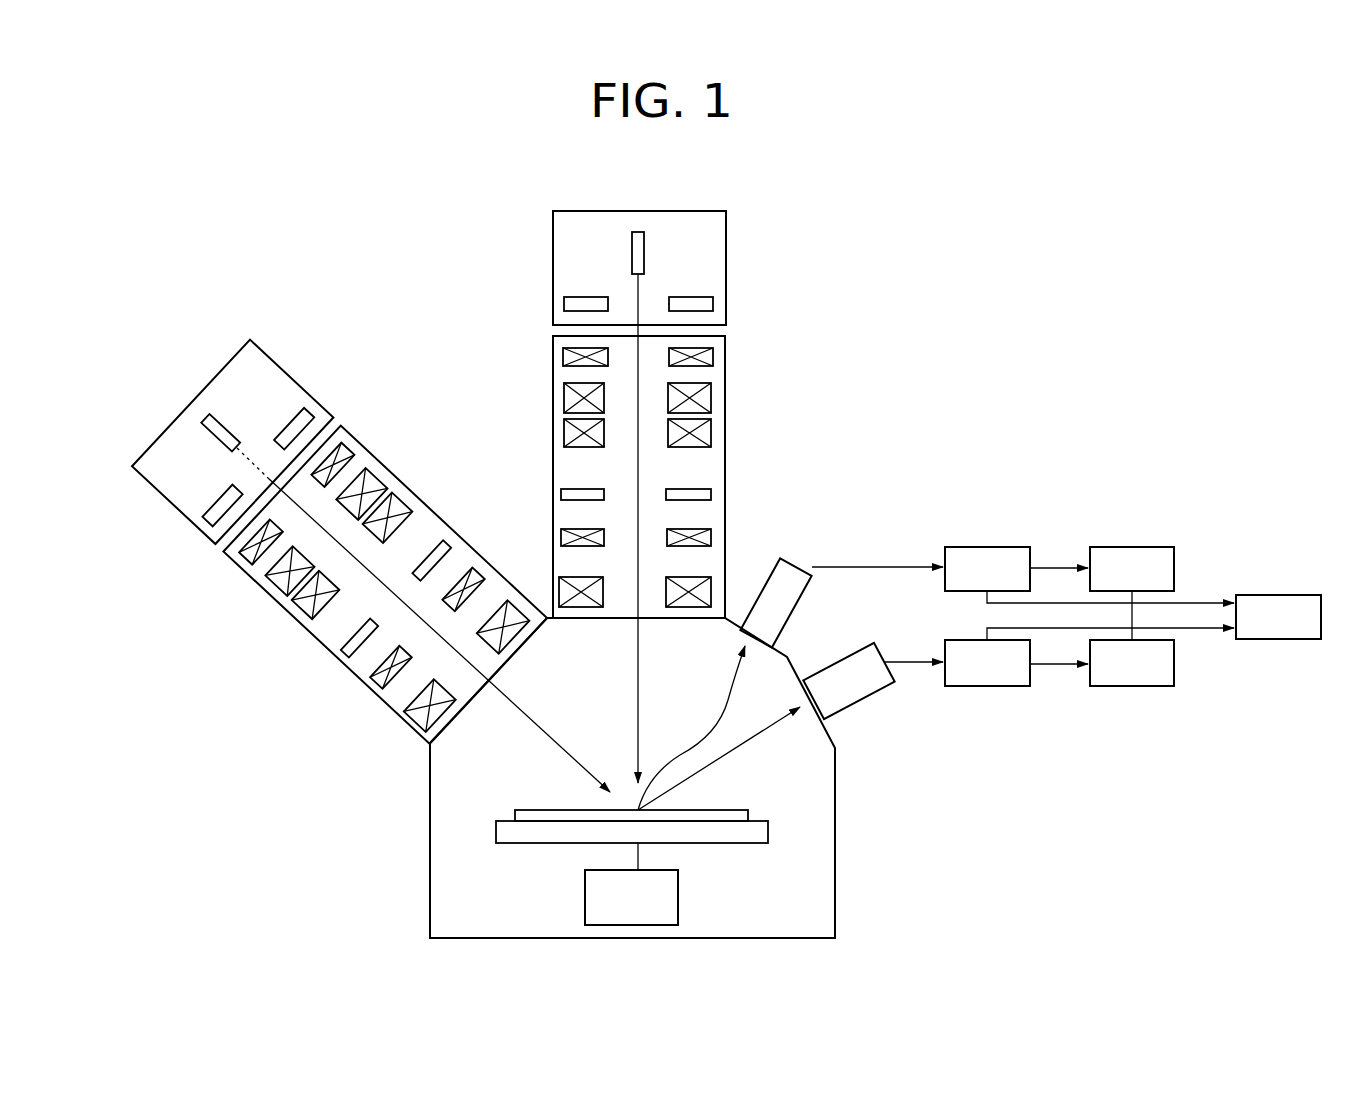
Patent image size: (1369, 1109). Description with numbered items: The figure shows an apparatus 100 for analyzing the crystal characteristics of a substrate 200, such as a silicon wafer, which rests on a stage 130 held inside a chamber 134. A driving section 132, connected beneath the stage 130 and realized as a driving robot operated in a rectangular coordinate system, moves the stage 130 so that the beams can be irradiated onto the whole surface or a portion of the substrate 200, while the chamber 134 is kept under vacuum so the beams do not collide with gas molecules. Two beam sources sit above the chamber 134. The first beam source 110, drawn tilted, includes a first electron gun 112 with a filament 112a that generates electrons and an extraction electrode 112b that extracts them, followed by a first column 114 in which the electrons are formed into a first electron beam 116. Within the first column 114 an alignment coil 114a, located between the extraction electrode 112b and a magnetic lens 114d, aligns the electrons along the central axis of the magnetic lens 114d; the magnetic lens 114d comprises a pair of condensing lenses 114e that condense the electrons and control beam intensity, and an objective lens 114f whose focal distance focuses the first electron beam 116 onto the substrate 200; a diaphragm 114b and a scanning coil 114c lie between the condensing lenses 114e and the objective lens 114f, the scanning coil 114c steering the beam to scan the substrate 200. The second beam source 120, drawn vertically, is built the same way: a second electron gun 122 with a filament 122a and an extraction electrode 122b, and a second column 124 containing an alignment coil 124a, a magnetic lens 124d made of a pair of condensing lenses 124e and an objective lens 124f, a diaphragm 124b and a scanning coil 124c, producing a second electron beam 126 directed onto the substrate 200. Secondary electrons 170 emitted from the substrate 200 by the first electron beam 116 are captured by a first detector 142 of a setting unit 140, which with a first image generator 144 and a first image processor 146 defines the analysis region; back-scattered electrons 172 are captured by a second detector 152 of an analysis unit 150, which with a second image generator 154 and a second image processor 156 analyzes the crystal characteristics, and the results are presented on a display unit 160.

The apparatus for analyzing crystal characteristics 100 is at (666, 168).
The first beam source 110 is at (220, 566).
The first electron gun 112 is at (291, 384).
The filament 112a is at (197, 417).
The extraction electrode 112b is at (205, 523).
The first column 114 is at (377, 458).
The alignment coil 114a is at (350, 430).
The diaphragm 114b is at (438, 540).
The scanning coil 114c is at (470, 570).
The magnetic lens 114d is at (370, 613).
The pair of condensing lenses 114e is at (273, 582).
The objective lens 114f is at (408, 714).
The first electron beam 116 is at (533, 723).
The second beam source 120 is at (527, 350).
The second electron gun 122 is at (727, 268).
The filament 122a is at (633, 253).
The extraction electrode 122b is at (713, 304).
The second column 124 is at (725, 424).
The alignment coil 124a is at (713, 357).
The diaphragm 124b is at (713, 494).
The scanning coil 124c is at (713, 531).
The magnetic lens 124d is at (468, 395).
The pair of condensing lenses 124e is at (564, 420).
The objective lens 124f is at (559, 592).
The second electron beam 126 is at (638, 661).
The stage 130 is at (748, 843).
The driving section 132 is at (678, 897).
The chamber 134 is at (836, 855).
The setting unit 140 is at (1159, 466).
The first detector 142 is at (798, 566).
The first image generator 144 is at (986, 546).
The first image processor 146 is at (1131, 546).
The analysis unit 150 is at (1159, 752).
The second detector 152 is at (862, 704).
The second image generator 154 is at (988, 686).
The second image processor 156 is at (1133, 686).
The display unit 160 is at (1280, 594).
The secondary electrons 170 is at (725, 707).
The back-scattered electrons 172 is at (688, 780).
The substrate 200 is at (748, 812).